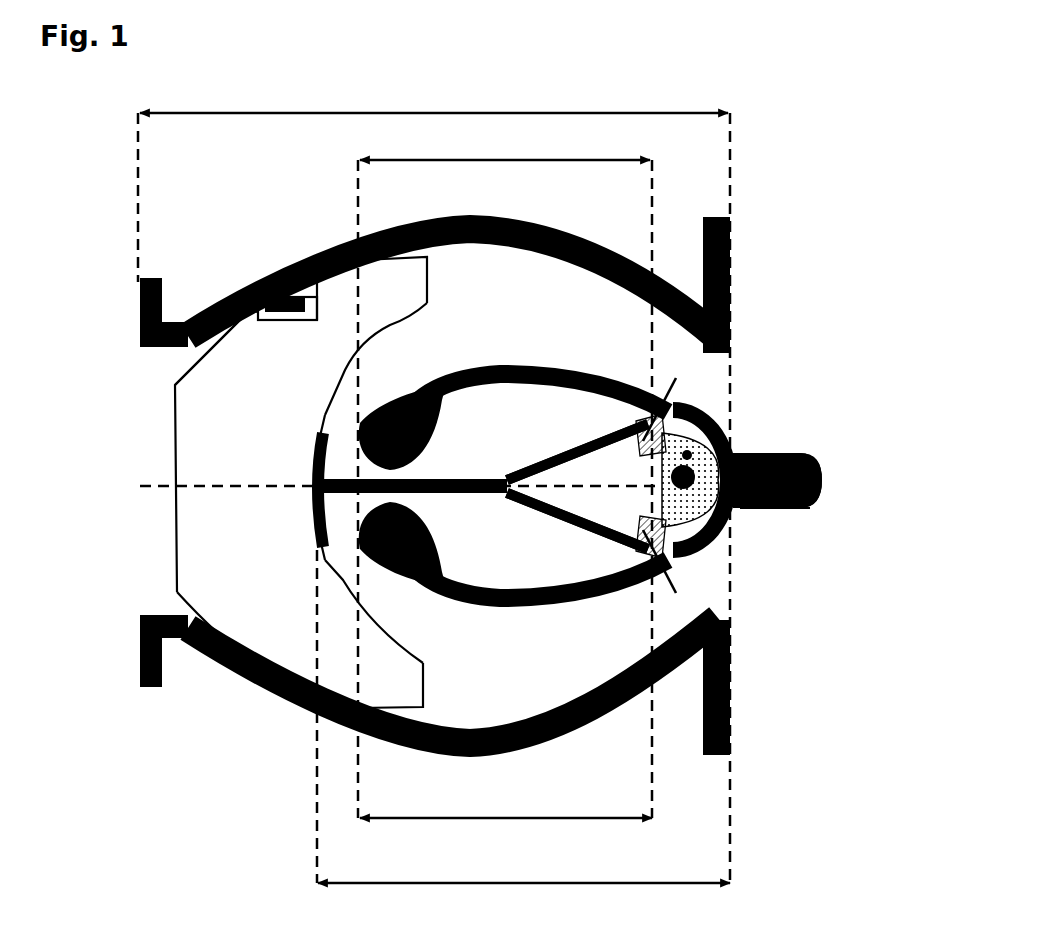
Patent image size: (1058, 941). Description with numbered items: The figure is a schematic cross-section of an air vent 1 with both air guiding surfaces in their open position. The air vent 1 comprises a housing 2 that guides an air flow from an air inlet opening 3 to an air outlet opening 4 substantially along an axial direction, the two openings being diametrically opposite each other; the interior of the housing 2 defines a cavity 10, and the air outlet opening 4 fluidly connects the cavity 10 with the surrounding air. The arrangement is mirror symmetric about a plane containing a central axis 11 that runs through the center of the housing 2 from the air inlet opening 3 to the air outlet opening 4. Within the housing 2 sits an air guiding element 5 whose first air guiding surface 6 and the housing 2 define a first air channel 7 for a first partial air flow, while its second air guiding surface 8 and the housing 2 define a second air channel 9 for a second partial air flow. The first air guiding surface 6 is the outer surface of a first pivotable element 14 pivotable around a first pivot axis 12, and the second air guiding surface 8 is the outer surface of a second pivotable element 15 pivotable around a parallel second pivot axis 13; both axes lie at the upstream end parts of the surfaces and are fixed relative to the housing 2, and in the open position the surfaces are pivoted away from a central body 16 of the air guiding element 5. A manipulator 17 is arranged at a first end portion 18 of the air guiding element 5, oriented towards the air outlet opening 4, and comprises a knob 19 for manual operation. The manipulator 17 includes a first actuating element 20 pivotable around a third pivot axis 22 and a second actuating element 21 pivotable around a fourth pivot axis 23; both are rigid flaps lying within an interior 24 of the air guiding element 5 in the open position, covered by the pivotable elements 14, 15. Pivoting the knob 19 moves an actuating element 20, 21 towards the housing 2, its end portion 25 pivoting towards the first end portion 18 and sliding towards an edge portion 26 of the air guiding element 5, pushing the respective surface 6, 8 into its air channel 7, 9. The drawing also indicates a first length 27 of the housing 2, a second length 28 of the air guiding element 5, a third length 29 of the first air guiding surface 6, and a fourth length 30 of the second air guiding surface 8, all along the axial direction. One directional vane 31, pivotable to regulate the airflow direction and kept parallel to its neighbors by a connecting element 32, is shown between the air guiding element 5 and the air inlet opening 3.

The air vent 1 is at (215, 748).
The housing 2 is at (290, 712).
The air inlet opening 3 is at (148, 560).
The air outlet opening 4 is at (735, 366).
The air guiding element 5 is at (482, 350).
The first air guiding surface 6 is at (547, 380).
The first air channel 7 is at (535, 308).
The second air guiding surface 8 is at (552, 608).
The second air channel 9 is at (533, 696).
The cavity 10 is at (412, 381).
The central axis 11 is at (828, 480).
The first pivot axis 12 is at (420, 445).
The second pivot axis 13 is at (432, 546).
The first pivotable element 14 is at (535, 468).
The second pivotable element 15 is at (540, 586).
The central body 16 is at (350, 582).
The manipulator 17 is at (800, 447).
The first end portion 18 is at (724, 532).
The knob 19 is at (795, 508).
The first actuating element 20 is at (560, 460).
The second actuating element 21 is at (572, 500).
The third pivot axis 22 is at (678, 394).
The fourth pivot axis 23 is at (675, 575).
The interior 24 is at (492, 474).
The end portion 25 is at (530, 460).
The edge portion 26 is at (675, 402).
The first length 27 is at (190, 118).
The second length 28 is at (650, 880).
The third length 29 is at (545, 165).
The fourth length 30 is at (572, 816).
The directional vane 31 is at (170, 388).
The connecting element 32 is at (270, 322).